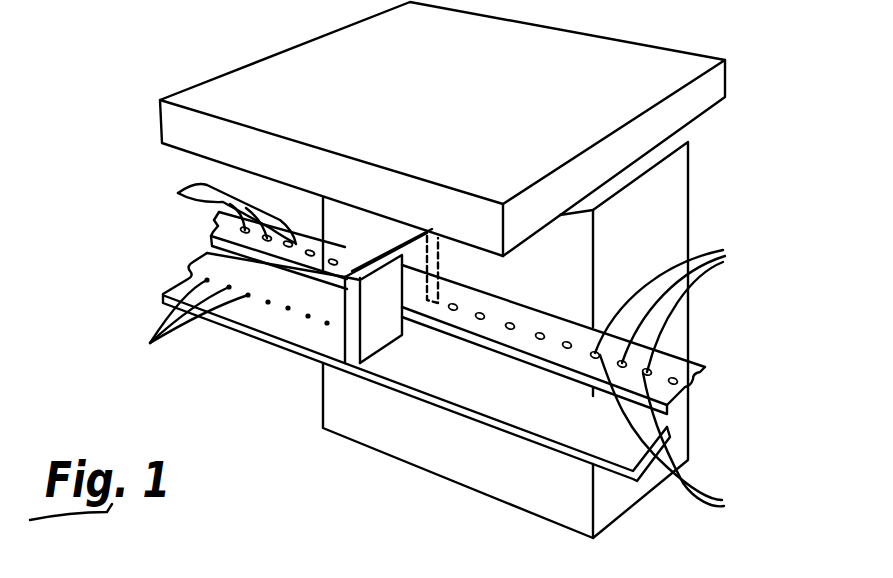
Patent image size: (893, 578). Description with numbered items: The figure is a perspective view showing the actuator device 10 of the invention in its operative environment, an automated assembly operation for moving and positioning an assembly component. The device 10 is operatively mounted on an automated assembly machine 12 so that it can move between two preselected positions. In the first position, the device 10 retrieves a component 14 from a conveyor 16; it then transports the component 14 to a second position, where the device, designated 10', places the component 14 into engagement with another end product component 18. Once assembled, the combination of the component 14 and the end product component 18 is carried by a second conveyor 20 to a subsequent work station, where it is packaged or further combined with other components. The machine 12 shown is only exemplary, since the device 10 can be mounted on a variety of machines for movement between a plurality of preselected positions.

The actuator device 10 is at (416, 367).
The actuator device (second position) 10' is at (372, 373).
The automated assembly machine 12 is at (672, 60).
The component 14 is at (437, 302).
The conveyor 16 is at (288, 324).
The end product component 18 is at (452, 343).
The conveyor 20 is at (670, 363).